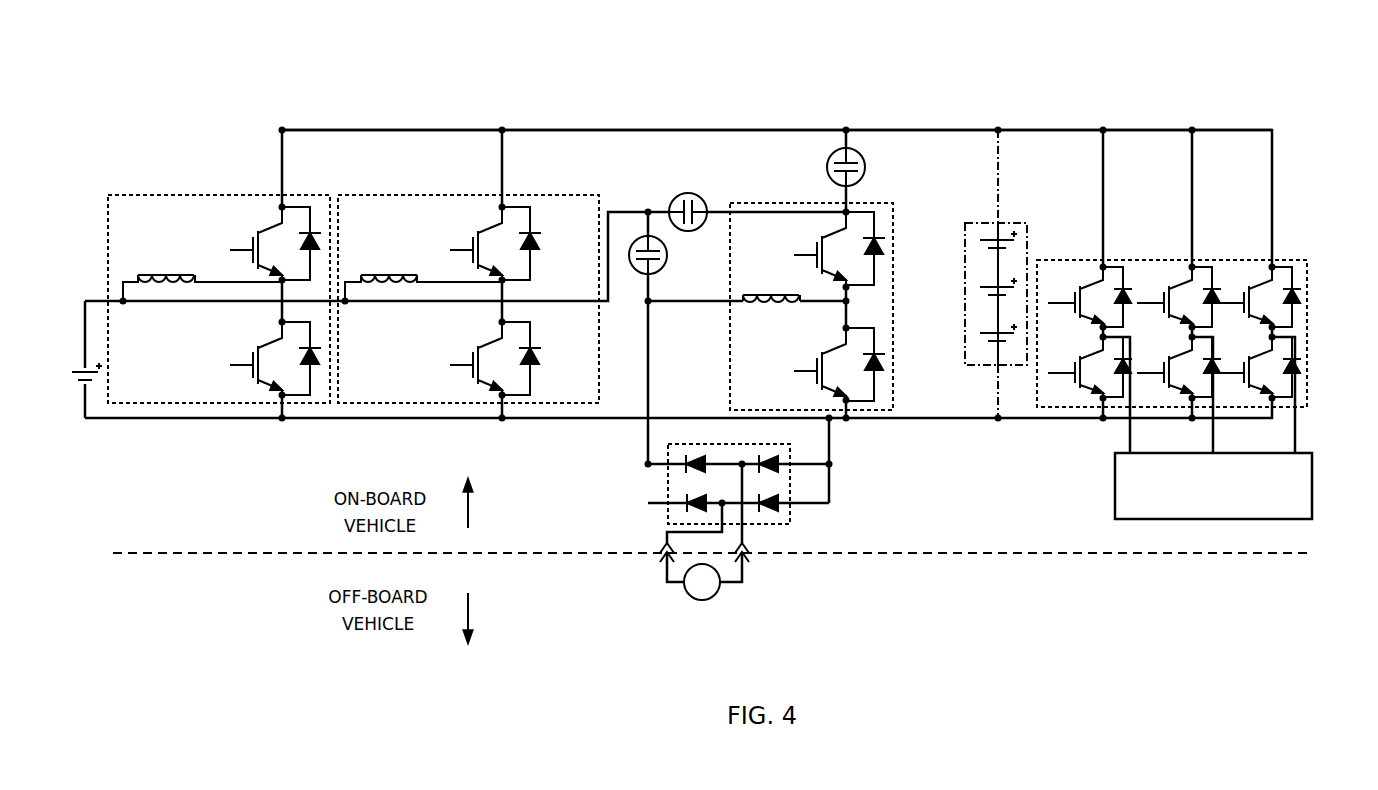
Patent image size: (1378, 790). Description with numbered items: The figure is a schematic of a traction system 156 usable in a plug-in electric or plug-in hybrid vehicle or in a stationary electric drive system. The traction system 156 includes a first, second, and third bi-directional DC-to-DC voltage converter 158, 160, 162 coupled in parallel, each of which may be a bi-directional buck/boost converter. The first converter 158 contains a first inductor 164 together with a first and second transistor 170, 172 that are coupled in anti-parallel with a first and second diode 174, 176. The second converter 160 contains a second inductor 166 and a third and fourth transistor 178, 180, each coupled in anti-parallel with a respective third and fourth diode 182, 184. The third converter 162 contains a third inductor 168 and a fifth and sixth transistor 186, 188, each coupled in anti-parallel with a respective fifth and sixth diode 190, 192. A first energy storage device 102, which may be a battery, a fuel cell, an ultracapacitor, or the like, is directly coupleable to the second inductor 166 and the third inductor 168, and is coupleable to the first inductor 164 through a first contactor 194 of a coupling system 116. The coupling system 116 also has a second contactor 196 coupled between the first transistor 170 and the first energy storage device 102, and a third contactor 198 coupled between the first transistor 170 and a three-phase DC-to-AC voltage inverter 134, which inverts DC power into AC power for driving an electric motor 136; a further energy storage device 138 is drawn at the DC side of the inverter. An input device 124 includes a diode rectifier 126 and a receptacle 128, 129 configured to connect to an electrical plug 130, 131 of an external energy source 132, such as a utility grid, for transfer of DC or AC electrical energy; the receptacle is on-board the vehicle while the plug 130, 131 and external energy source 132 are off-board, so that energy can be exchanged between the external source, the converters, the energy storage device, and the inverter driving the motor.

The first energy storage device 102 is at (82, 370).
The coupling system 116 is at (664, 191).
The input device 124 is at (620, 480).
The diode rectifier 126 is at (793, 520).
The receptacle 128 is at (662, 548).
The receptacle 129 is at (748, 547).
The electrical plug 130 is at (662, 557).
The electrical plug 131 is at (748, 556).
The external energy source 132 is at (699, 601).
The three-phase DC-to-AC voltage inverter 134 is at (1066, 260).
The electric motor 136 is at (1312, 500).
The traction battery 138 is at (973, 366).
The traction system 156 is at (658, 100).
The first bi-directional DC-to-DC voltage converter 158 is at (857, 412).
The second bi-directional DC-to-DC voltage converter 160 is at (418, 195).
The third bi-directional DC-to-DC voltage converter 162 is at (148, 195).
The first inductor 164 is at (753, 293).
The second inductor 166 is at (370, 275).
The third inductor 168 is at (147, 275).
The first transistor 170 is at (812, 253).
The second transistor 172 is at (812, 365).
The first diode 174 is at (882, 248).
The second diode 176 is at (882, 370).
The third transistor 178 is at (465, 248).
The fourth transistor 180 is at (465, 362).
The third diode 182 is at (542, 245).
The fourth diode 184 is at (537, 365).
The fifth transistor 186 is at (243, 248).
The sixth transistor 188 is at (243, 361).
The fifth diode 190 is at (312, 248).
The sixth diode 192 is at (314, 372).
The first contactor 194 is at (661, 268).
The second contactor 196 is at (701, 199).
The third contactor 198 is at (832, 154).